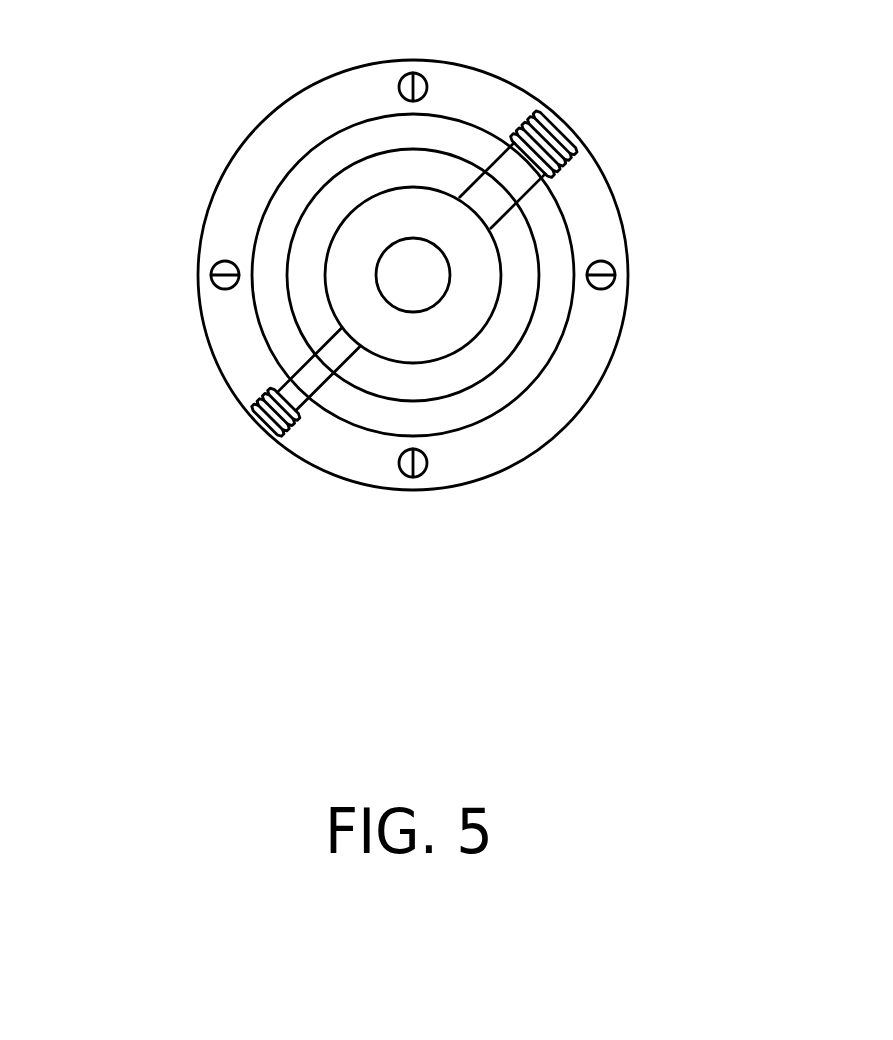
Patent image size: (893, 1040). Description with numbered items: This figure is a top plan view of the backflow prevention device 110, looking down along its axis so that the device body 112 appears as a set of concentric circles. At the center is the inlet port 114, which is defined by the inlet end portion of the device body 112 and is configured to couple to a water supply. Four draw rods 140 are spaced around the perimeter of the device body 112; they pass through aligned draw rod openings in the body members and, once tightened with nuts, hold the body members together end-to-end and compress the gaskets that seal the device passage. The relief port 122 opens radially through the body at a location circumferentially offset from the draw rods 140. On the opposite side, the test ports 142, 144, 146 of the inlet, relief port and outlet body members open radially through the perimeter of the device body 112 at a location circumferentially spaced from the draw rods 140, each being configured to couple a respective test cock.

The backflow prevention device 110 is at (163, 700).
The device body 112 is at (250, 135).
The inlet port 114 is at (415, 287).
The relief port 122 is at (568, 122).
The draw rods 140 is at (613, 278).
The test port 142 is at (217, 408).
The test port 144 is at (217, 408).
The test port 146 is at (257, 433).